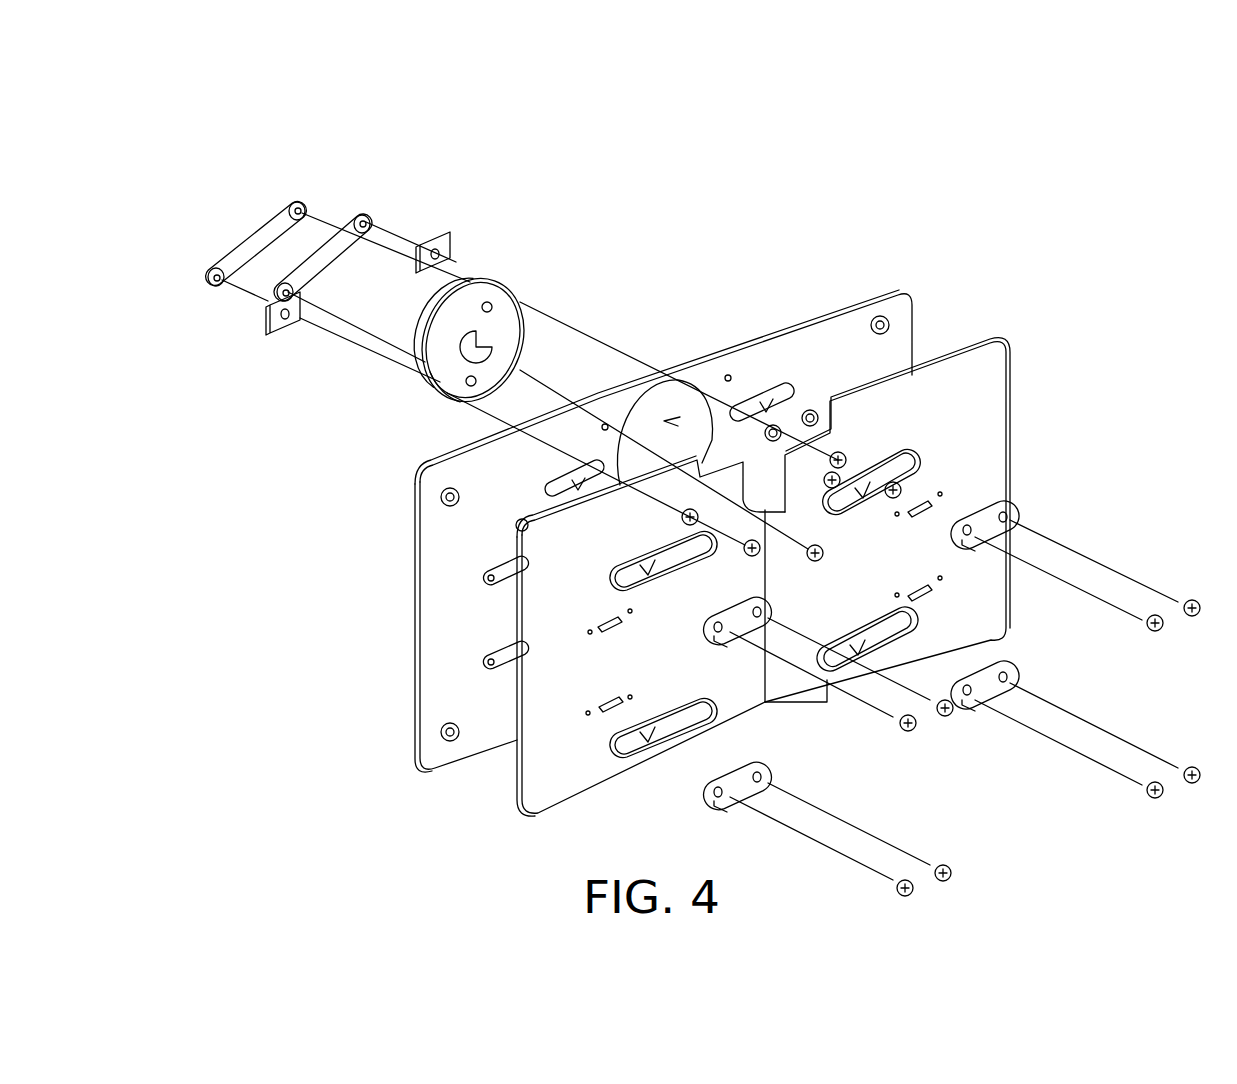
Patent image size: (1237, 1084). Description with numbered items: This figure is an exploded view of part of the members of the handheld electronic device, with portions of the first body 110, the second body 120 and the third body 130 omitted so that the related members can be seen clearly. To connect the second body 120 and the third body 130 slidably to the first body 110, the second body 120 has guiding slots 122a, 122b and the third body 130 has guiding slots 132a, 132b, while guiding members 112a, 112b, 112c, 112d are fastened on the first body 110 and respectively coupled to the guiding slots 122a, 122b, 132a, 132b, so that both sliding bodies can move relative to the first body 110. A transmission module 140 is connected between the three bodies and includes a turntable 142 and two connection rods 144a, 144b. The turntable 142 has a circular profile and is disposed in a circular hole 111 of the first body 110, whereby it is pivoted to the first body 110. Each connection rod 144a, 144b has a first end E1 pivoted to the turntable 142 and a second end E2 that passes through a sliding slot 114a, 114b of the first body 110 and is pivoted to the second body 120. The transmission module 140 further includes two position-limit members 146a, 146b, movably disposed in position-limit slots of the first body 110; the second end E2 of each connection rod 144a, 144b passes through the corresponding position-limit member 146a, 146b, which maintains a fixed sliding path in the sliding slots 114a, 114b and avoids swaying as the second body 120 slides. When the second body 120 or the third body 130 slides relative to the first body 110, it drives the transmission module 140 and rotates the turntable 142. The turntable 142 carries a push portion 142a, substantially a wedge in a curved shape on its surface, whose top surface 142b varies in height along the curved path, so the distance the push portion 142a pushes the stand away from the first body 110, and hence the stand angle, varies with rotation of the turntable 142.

The first body 110 is at (440, 650).
The circular hole 111 is at (683, 383).
The guiding member 112a is at (990, 503).
The guiding member 112b is at (968, 706).
The guiding member 112c is at (722, 645).
The guiding member 112d is at (770, 768).
The sliding slot 114a is at (760, 406).
The sliding slot 114b is at (562, 486).
The second body 120 is at (1003, 397).
The guiding slot 122a is at (922, 474).
The guiding slot 122b is at (920, 617).
The third body 130 is at (547, 805).
The guiding slot 132a is at (612, 585).
The guiding slot 132b is at (617, 765).
The transmission module 140 is at (553, 125).
The turntable 142 is at (489, 278).
The push portion 142a is at (450, 393).
The top surface 142b is at (482, 358).
The connection rod 144a is at (312, 250).
The connection rod 144b is at (243, 232).
The position-limit member 146a is at (433, 238).
The position-limit member 146b is at (302, 302).
The first end E1 is at (297, 205).
The second end E2 is at (362, 204).